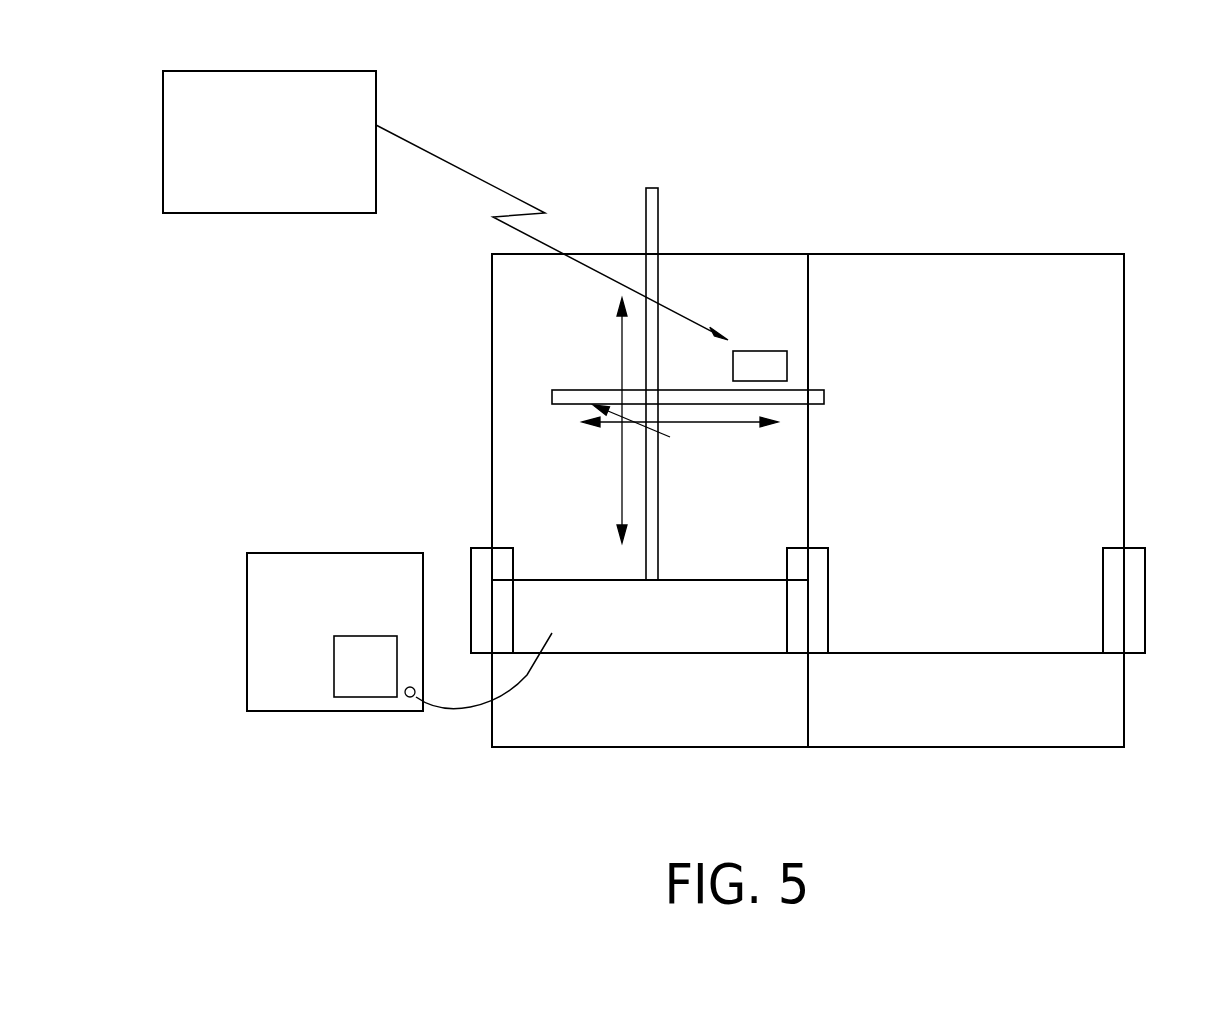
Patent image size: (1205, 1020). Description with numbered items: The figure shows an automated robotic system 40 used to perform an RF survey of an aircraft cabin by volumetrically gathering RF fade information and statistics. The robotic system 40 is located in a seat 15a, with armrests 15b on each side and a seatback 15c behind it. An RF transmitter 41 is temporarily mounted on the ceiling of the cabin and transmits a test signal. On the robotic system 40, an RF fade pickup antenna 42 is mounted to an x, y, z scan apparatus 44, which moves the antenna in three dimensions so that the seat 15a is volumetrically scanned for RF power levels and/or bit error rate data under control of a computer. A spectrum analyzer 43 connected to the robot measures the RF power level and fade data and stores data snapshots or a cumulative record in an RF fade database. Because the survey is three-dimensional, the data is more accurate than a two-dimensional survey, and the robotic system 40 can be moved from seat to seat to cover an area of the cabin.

The robotic system 40 is at (646, 165).
The RF transmitter 41 is at (352, 72).
The RF fade pickup antenna 42 is at (760, 351).
The spectrum analyzer 43 is at (337, 553).
The x, y, z scan apparatus 44 is at (658, 228).
The seat 15a is at (585, 747).
The armrests 15b is at (828, 600).
The seatback 15c is at (492, 331).